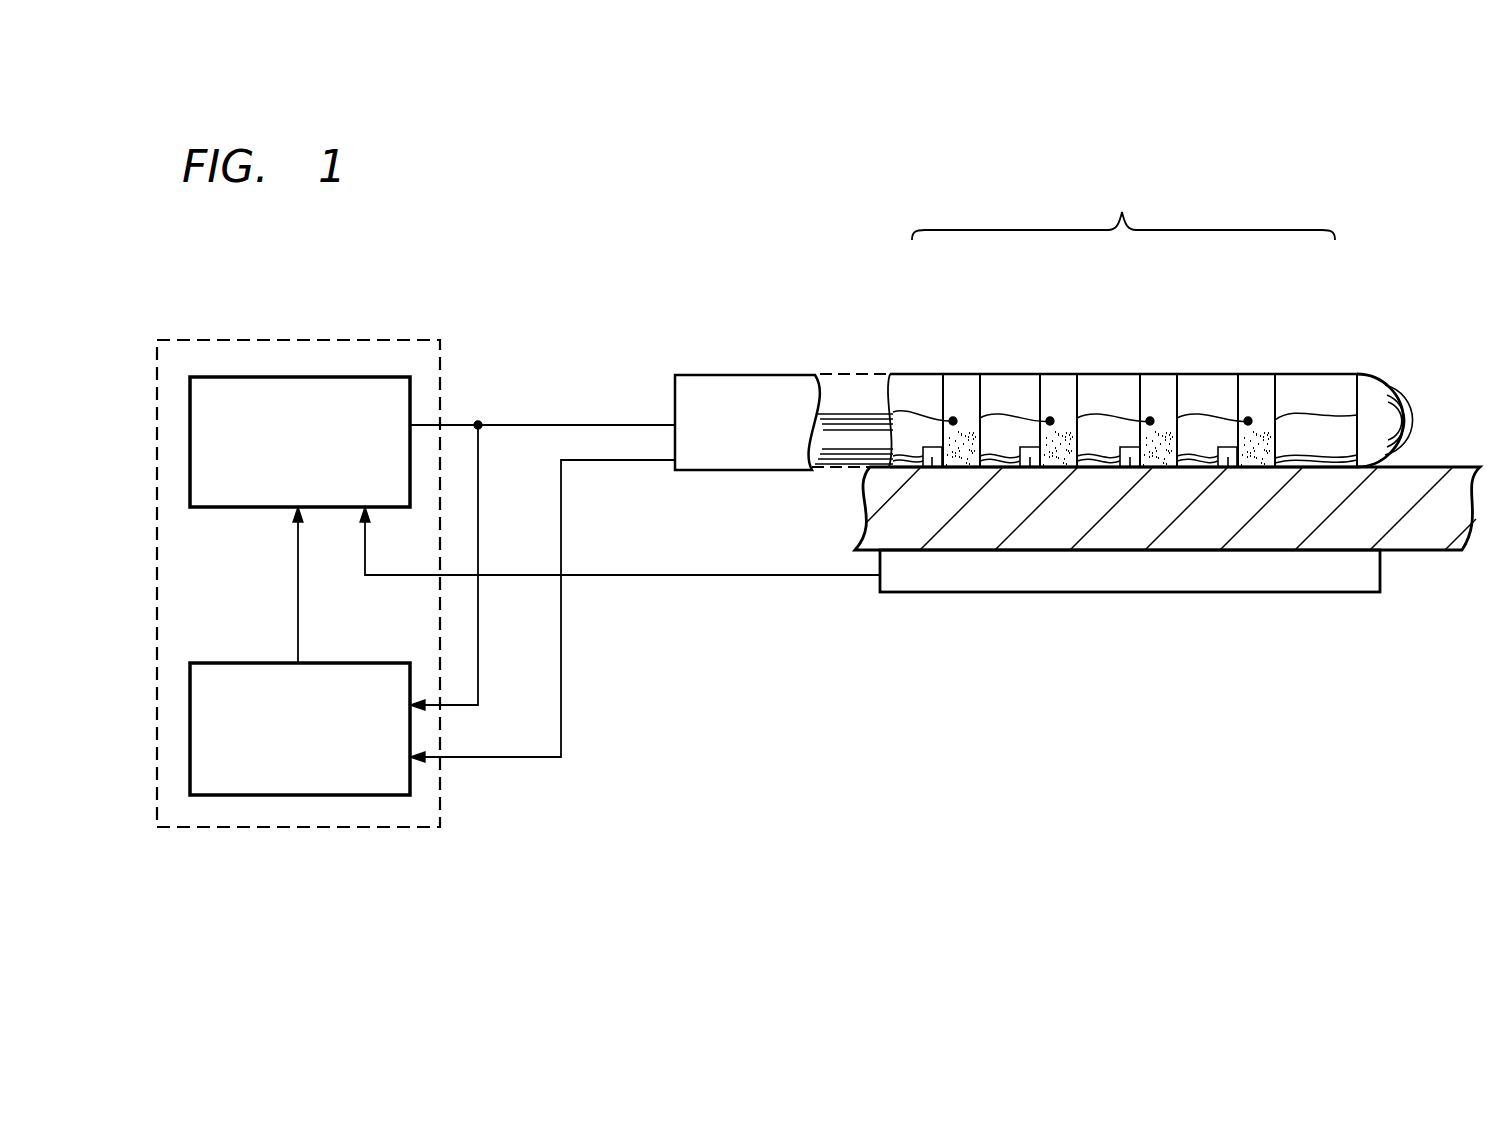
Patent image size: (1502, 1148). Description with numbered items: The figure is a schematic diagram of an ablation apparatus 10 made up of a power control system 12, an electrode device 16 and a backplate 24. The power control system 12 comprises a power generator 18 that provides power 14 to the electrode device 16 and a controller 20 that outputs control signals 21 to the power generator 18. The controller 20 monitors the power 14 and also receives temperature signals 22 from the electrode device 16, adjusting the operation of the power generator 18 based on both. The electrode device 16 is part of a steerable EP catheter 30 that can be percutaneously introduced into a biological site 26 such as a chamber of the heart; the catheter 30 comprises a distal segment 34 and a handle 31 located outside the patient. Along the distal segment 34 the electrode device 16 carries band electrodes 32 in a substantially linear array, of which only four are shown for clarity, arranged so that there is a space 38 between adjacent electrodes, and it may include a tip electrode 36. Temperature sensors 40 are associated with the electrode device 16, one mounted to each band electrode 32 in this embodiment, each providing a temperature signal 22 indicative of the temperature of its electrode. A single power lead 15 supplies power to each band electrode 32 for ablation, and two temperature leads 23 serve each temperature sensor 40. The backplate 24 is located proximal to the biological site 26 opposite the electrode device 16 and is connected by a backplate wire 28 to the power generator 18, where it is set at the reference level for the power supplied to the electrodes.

The ablation apparatus 10 is at (596, 258).
The power control system 12 is at (240, 827).
The power 14 is at (458, 425).
The power lead 15 is at (897, 412).
The electrode device 16 is at (1087, 430).
The power generator 18 is at (298, 377).
The controller 20 is at (350, 795).
The control signals 21 is at (292, 577).
The temperature signals 22 is at (561, 517).
The temperature leads 23 is at (1007, 457).
The backplate 24 is at (1298, 595).
The biological site 26 is at (856, 508).
The backplate wire 28 is at (653, 578).
The steerable EP catheter 30 is at (1088, 419).
The handle 31 is at (730, 375).
The band electrodes 32 is at (990, 396).
The distal segment 34 is at (1330, 425).
The tip electrode 36 is at (1392, 388).
The space 38 is at (1010, 374).
The temperature sensors 40 is at (933, 467).